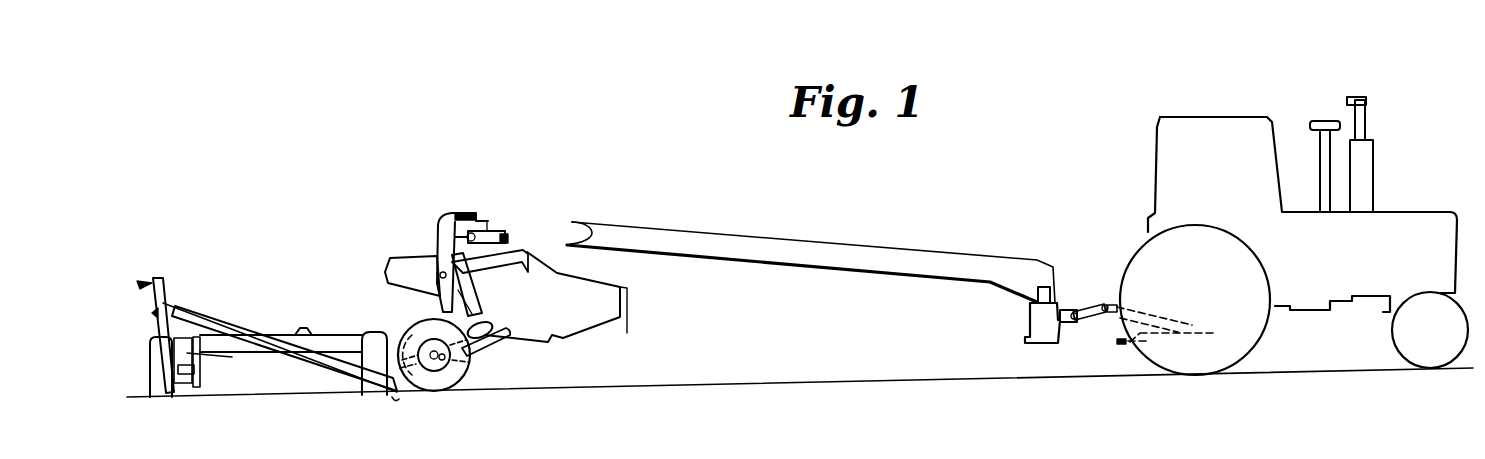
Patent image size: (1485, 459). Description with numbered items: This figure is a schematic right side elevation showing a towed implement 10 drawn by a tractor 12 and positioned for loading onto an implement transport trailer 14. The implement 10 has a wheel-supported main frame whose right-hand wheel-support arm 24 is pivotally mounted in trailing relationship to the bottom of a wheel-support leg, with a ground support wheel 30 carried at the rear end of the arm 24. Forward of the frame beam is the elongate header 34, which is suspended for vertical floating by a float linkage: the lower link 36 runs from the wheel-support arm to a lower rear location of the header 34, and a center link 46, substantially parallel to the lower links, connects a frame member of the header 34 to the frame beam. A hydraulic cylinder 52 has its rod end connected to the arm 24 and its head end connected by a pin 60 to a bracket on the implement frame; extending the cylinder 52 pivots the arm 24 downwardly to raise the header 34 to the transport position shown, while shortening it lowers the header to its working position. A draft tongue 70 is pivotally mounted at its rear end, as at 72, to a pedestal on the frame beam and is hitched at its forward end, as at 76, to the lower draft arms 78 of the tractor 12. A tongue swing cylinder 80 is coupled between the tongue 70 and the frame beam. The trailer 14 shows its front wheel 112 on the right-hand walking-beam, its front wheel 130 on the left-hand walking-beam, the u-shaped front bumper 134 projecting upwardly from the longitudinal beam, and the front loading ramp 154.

The towed implement 10 is at (610, 188).
The tractor 12 is at (1284, 92).
The implement transport trailer 14 is at (268, 274).
The right-hand wheel-support arm 24 is at (487, 328).
The ground support wheel 30 is at (466, 377).
The header 34 is at (630, 302).
The right-hand lower link 36 is at (488, 345).
The center link 46 is at (515, 250).
The hydraulic cylinder 52 is at (437, 303).
The pin 60 is at (405, 362).
The draft tongue 70 is at (797, 268).
The pivotal mounting 72 is at (470, 212).
The hitch 76 is at (1103, 315).
The lower draft arms 78 is at (1160, 315).
The tongue swing cylinder 80 is at (493, 230).
The front wheel 112 is at (177, 393).
The front wheel 130 is at (366, 390).
The front bumper 134 is at (137, 281).
The front loading ramp 154 is at (314, 386).